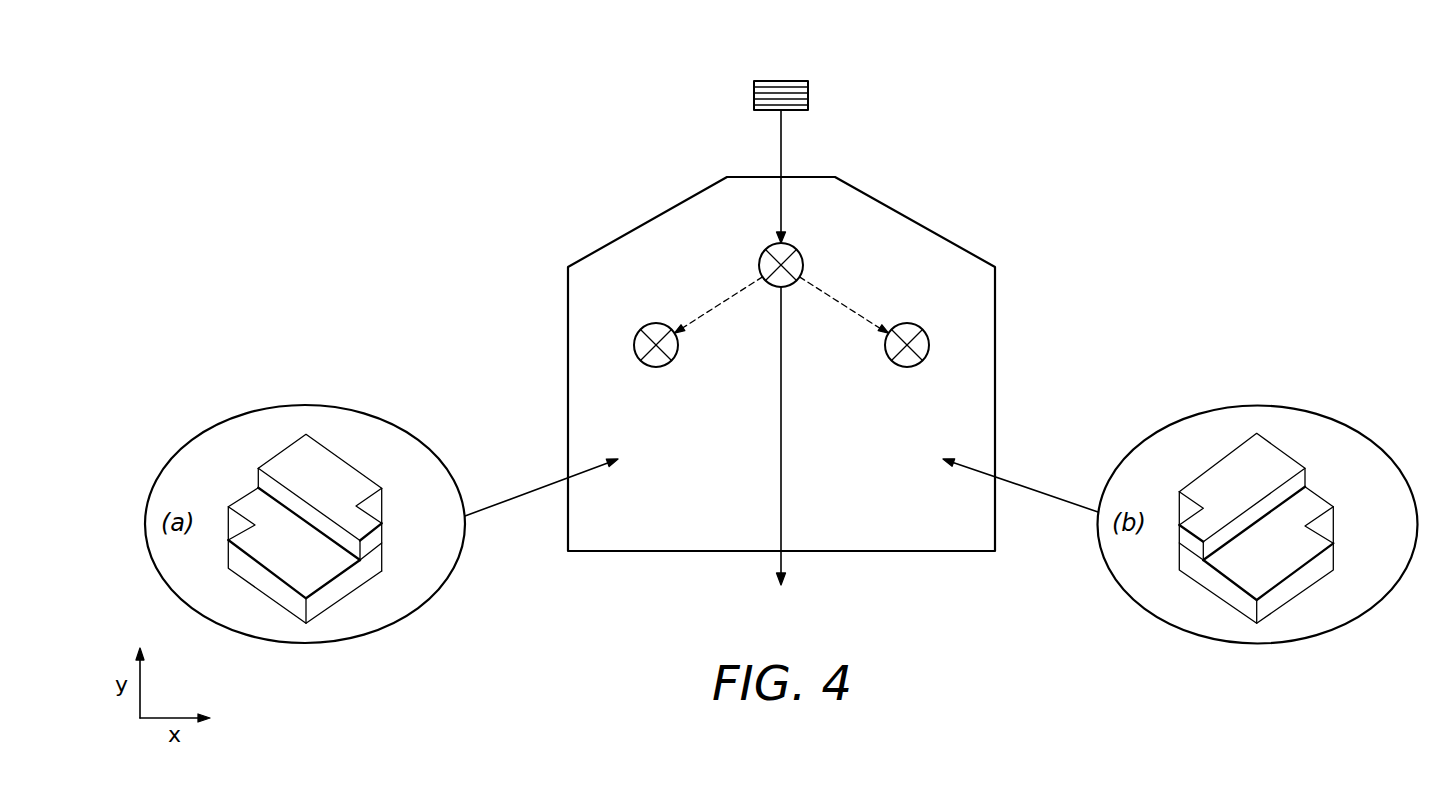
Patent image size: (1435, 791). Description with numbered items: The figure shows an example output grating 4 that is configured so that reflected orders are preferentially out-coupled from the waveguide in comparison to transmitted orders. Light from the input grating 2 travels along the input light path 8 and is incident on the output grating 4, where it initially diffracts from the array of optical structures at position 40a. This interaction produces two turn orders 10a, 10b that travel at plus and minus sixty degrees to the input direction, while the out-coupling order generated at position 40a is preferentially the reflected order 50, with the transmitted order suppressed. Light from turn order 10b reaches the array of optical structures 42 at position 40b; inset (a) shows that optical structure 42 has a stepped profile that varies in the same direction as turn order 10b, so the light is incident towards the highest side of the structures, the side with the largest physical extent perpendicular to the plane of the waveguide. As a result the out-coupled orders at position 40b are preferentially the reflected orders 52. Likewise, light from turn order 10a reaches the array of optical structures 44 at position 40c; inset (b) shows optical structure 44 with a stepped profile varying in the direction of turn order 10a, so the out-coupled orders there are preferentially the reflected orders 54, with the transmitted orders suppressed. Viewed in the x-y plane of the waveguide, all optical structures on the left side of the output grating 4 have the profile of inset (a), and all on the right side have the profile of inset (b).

The input grating 2 is at (808, 93).
The input light path 8 is at (781, 140).
The output grating 4 is at (975, 538).
The reflected order 50 is at (765, 250).
The position 40a is at (789, 252).
The position 40b is at (653, 349).
The position 40c is at (913, 349).
The reflected orders 52 is at (641, 330).
The reflected orders 54 is at (921, 330).
The turn order 10a is at (843, 305).
The turn order 10b is at (720, 304).
The optical structure 42 is at (250, 502).
The optical structure 44 is at (1220, 470).